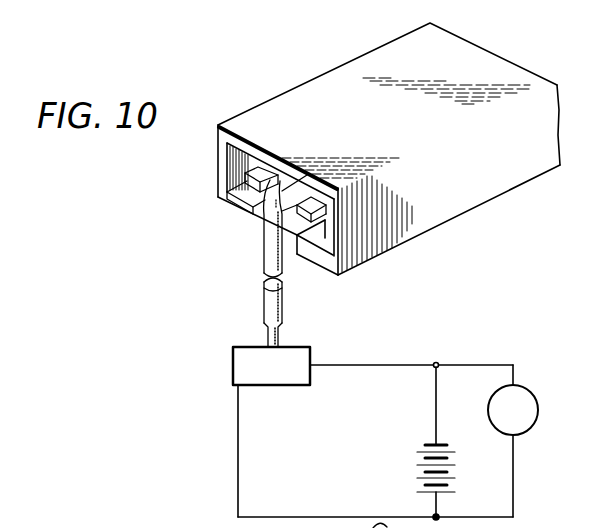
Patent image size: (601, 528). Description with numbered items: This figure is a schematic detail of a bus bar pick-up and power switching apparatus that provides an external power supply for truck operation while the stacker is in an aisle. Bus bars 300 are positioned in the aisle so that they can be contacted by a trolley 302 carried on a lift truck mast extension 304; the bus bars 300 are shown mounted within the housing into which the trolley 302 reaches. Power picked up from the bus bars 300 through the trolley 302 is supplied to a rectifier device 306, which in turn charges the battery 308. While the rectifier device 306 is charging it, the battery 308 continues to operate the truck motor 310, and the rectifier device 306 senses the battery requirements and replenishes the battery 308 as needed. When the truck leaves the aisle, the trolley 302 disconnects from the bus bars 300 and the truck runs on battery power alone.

The bus bars 300 is at (314, 205).
The trolley 302 is at (232, 199).
The lift truck mast extension 304 is at (268, 247).
The rectifier device 306 is at (245, 367).
The battery 308 is at (470, 485).
The truck motor 310 is at (537, 411).